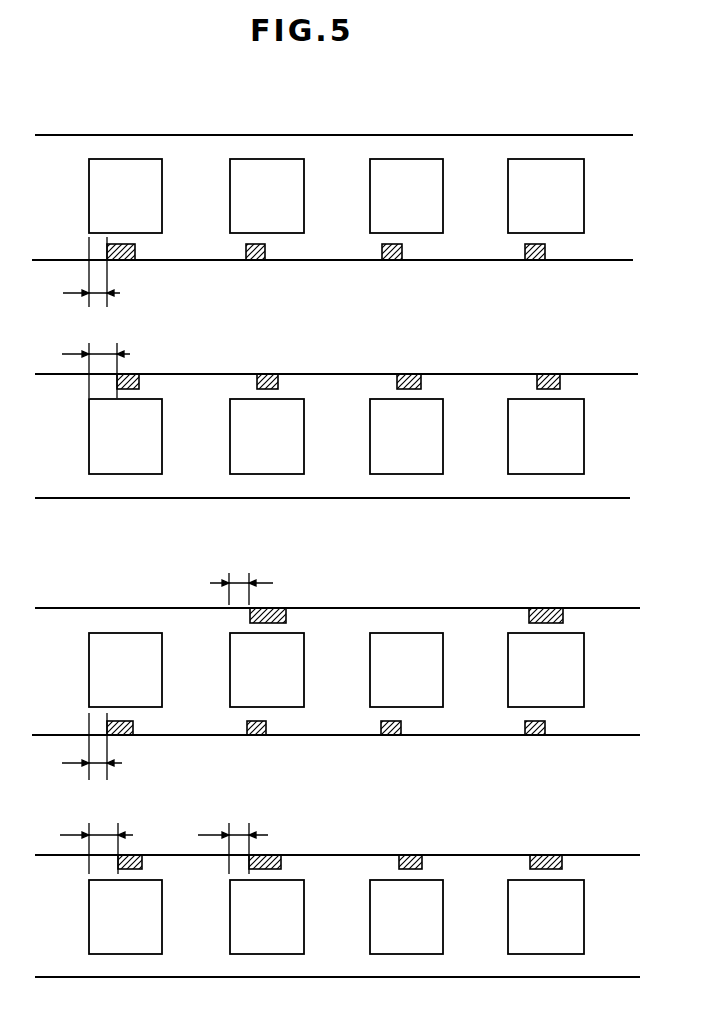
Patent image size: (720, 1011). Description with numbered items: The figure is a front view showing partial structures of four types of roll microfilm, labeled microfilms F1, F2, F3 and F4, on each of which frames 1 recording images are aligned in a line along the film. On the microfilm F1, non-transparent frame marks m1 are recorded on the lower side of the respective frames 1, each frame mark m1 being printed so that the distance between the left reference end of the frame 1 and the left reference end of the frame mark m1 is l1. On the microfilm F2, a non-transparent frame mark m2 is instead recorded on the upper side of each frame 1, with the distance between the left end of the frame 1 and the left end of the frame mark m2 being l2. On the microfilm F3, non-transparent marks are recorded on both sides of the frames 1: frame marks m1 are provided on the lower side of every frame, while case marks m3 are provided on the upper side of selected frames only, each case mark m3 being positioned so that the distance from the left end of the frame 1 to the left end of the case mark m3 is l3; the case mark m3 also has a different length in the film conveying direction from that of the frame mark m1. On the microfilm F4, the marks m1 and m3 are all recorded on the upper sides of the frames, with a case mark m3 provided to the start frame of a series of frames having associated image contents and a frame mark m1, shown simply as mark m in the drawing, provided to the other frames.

The frame 1 is at (163, 178).
The microfilm F1 is at (433, 134).
The microfilm F2 is at (385, 373).
The microfilm F3 is at (452, 607).
The microfilm F4 is at (467, 855).
The frame mark m1 is at (254, 262).
The frame mark m2 is at (268, 373).
The case mark m3 is at (278, 607).
The mark m is at (138, 855).
The distance l1 is at (89, 508).
The distance l2 is at (94, 602).
The distance l3 is at (235, 715).